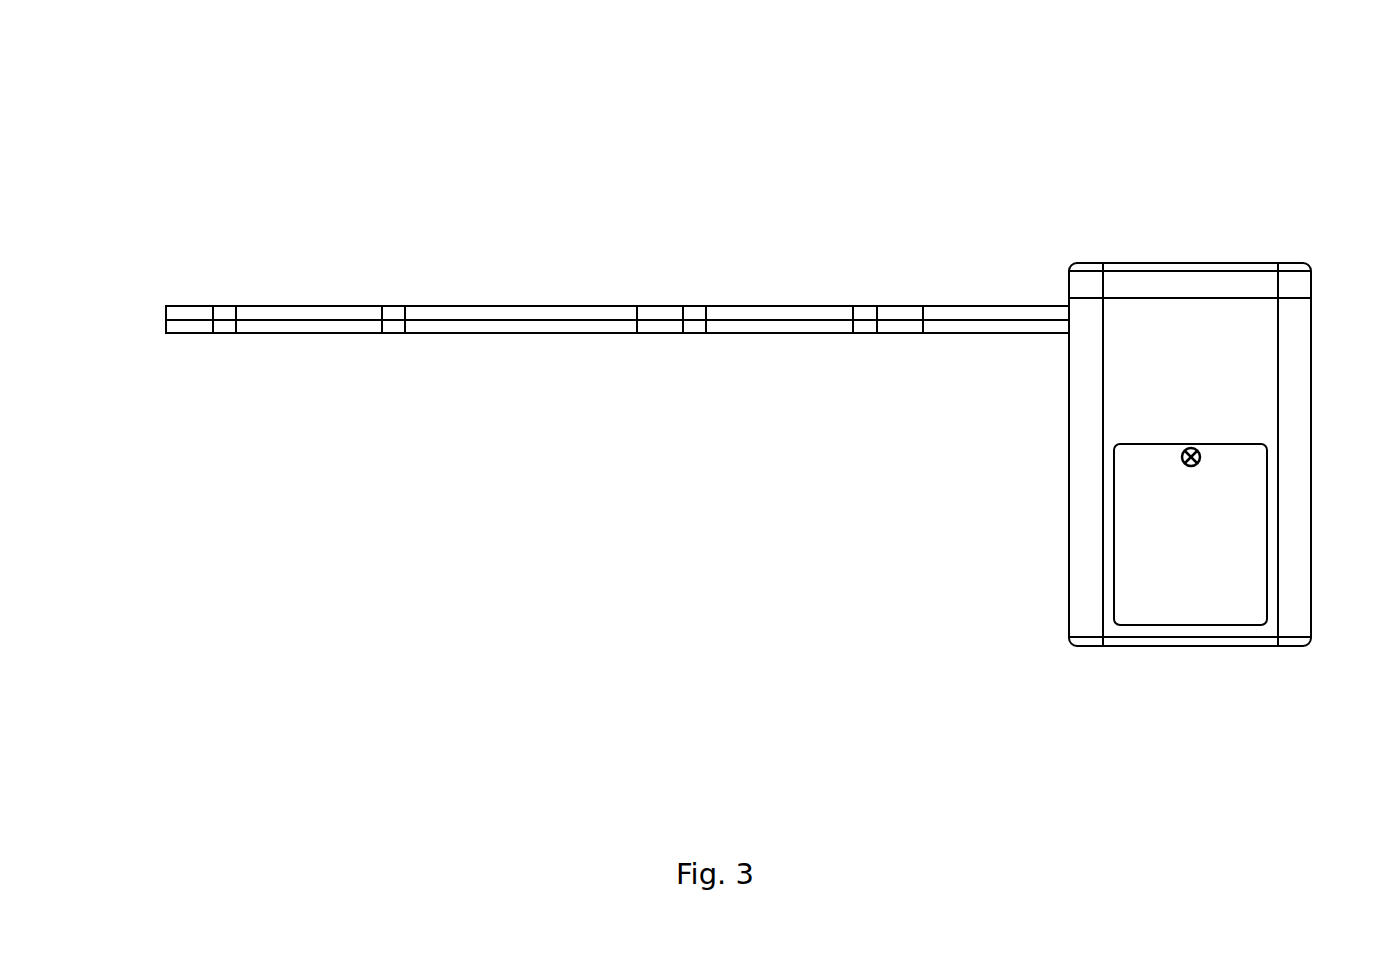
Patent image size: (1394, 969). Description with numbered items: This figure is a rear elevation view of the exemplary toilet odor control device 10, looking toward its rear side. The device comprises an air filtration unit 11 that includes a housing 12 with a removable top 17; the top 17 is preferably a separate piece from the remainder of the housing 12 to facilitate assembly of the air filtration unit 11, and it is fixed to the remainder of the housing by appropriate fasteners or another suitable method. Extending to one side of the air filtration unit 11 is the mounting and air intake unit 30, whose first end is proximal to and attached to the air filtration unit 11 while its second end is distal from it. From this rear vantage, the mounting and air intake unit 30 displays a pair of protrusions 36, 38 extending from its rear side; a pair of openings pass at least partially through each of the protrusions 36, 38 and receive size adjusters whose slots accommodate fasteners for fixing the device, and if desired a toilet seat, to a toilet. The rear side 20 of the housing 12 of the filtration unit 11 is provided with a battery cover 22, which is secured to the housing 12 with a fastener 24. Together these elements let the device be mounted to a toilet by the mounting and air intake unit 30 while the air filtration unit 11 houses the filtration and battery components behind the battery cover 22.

The toilet odor control device 10 is at (236, 86).
The mounting and air intake unit 30 is at (983, 312).
The protrusion 38 is at (297, 315).
The protrusion 36 is at (759, 314).
The rear side 20 is at (1220, 345).
The removable top 17 is at (1160, 263).
The air filtration unit 11 is at (1146, 340).
The housing 12 is at (1086, 413).
The battery cover 22 is at (1140, 556).
The fastener 24 is at (1182, 462).